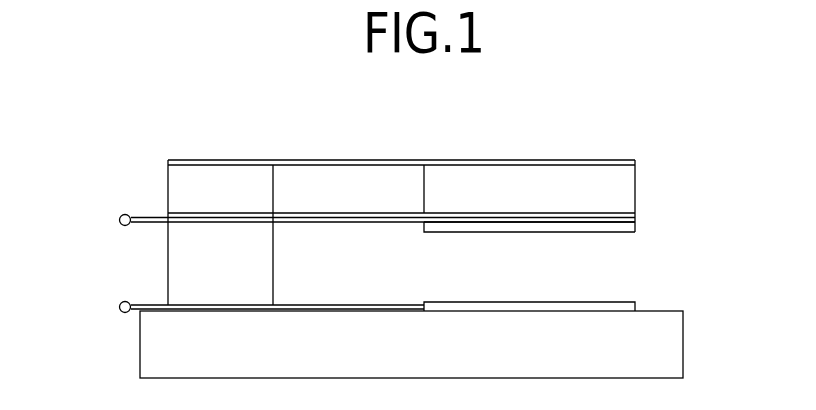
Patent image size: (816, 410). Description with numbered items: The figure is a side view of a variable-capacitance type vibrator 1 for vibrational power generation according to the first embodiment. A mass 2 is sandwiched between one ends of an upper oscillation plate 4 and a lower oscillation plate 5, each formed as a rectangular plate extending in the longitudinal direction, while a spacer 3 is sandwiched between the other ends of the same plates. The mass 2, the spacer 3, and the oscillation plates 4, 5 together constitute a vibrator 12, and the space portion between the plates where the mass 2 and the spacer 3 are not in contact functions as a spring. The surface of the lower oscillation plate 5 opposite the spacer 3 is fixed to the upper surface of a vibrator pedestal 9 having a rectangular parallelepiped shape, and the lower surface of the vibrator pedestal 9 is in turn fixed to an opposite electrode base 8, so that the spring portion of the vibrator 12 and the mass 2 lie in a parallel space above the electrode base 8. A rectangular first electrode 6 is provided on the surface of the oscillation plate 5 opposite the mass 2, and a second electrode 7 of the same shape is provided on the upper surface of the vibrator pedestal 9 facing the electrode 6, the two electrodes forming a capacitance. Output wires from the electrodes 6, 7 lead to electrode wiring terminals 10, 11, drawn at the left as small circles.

The variable-capacitance type vibrator 1 is at (684, 115).
The mass 2 is at (623, 188).
The spacer 3 is at (170, 188).
The oscillation plate 4 is at (353, 159).
The oscillation plate 5 is at (635, 220).
The electrode 6 is at (495, 228).
The electrode 7 is at (563, 309).
The electrode base 8 is at (672, 346).
The vibrator pedestal 9 is at (170, 270).
The electrode wiring terminal 10 is at (118, 220).
The electrode wiring terminal 11 is at (118, 307).
The vibrator 12 is at (401, 196).